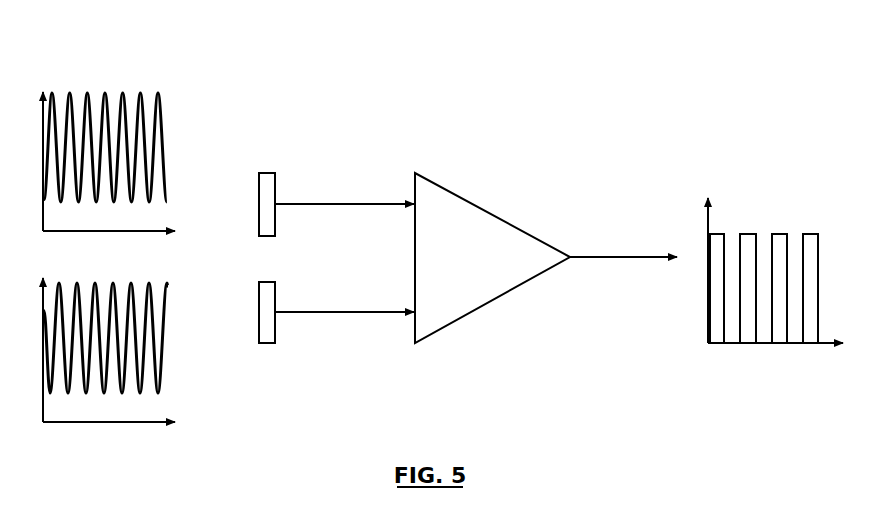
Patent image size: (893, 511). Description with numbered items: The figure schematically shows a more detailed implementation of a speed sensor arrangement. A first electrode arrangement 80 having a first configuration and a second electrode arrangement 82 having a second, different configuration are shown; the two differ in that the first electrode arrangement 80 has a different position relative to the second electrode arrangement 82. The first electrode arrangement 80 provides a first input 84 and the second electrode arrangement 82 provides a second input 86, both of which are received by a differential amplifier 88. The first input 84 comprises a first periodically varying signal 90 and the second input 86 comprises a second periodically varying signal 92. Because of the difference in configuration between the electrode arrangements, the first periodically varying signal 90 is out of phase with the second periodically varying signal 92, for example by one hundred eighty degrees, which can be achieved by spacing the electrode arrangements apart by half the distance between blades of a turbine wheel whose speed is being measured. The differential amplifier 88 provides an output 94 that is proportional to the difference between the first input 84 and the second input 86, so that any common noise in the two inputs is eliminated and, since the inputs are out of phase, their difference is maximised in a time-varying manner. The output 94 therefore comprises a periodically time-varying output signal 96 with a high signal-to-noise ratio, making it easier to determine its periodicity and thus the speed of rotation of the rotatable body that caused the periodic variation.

The first electrode arrangement 80 is at (265, 188).
The second electrode arrangement 82 is at (265, 327).
The first input 84 is at (352, 198).
The second input 86 is at (348, 318).
The differential amplifier 88 is at (490, 264).
The first periodically varying signal 90 is at (168, 100).
The second periodically varying signal 92 is at (167, 328).
The output 94 is at (610, 250).
The periodically time-varying output signal 96 is at (777, 228).